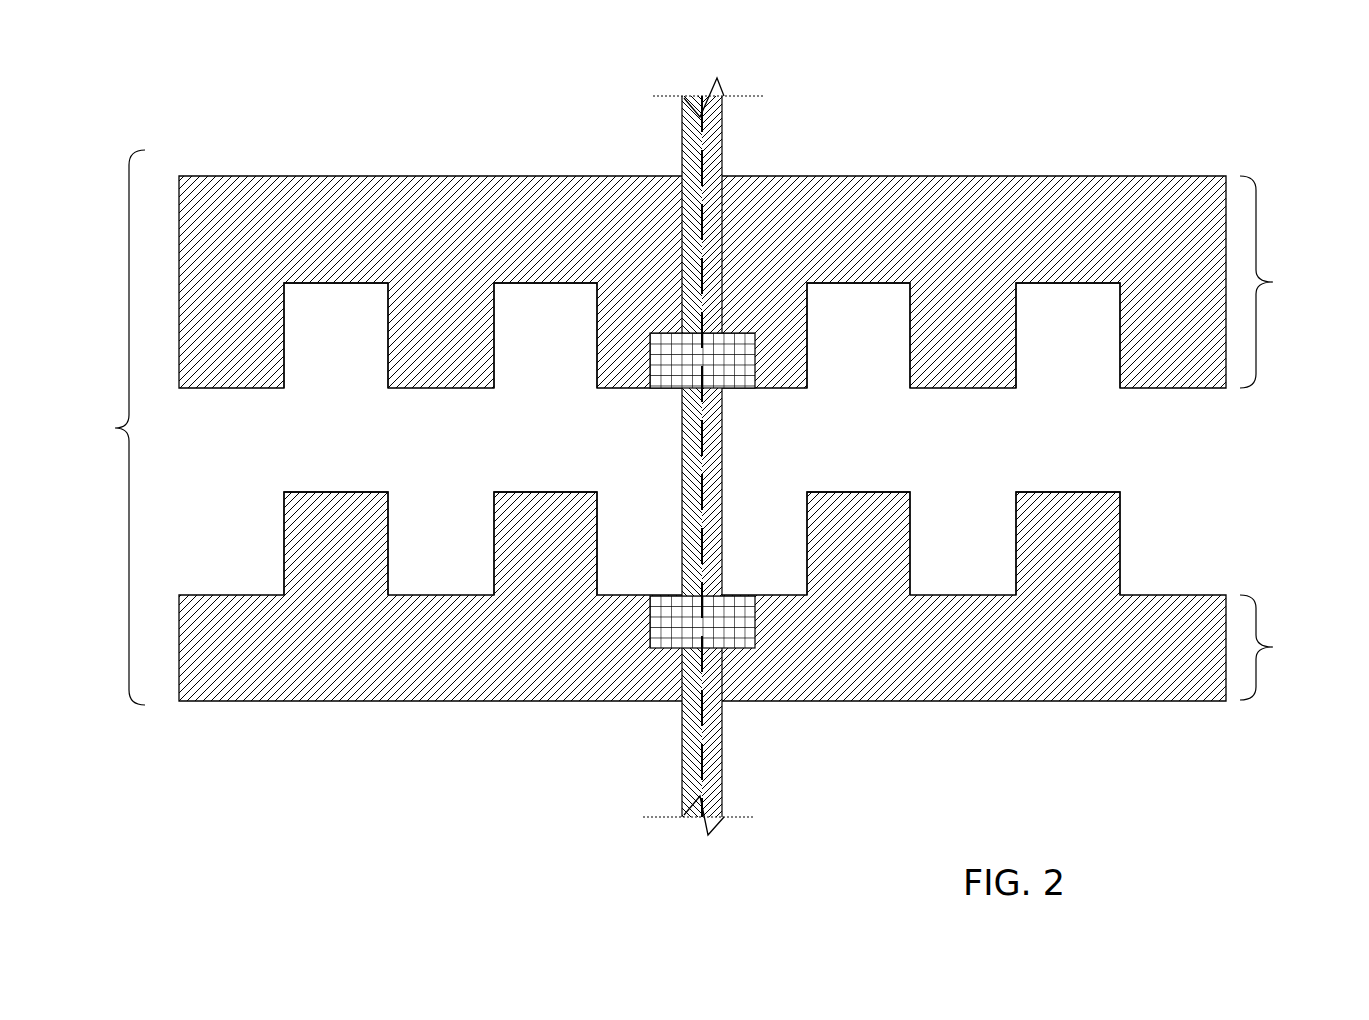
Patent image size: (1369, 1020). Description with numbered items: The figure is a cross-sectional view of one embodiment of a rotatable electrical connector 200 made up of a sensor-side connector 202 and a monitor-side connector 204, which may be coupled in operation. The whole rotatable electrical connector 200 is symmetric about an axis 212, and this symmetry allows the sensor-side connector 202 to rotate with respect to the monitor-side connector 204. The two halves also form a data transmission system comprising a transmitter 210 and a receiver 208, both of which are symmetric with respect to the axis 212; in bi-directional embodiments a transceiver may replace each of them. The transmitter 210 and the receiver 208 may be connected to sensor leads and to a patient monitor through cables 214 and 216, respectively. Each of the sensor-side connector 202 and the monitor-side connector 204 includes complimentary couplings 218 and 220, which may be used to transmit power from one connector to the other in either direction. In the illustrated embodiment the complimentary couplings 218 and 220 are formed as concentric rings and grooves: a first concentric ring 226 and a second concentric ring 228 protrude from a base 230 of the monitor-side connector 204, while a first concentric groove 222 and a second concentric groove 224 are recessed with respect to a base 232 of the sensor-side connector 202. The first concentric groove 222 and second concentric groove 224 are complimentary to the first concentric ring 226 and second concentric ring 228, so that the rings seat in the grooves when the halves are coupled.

The rotatable electrical connector 200 is at (96, 427).
The sensor-side connector 202 is at (406, 101).
The monitor-side connector 204 is at (396, 746).
The receiver 208 is at (690, 594).
The transmitter 210 is at (692, 387).
The axis 212 is at (703, 495).
The cable 214 is at (720, 157).
The cable 216 is at (720, 797).
The complimentary coupling 218 is at (556, 480).
The complimentary coupling 220 is at (354, 414).
The first concentric groove 222 is at (581, 284).
The second concentric groove 224 is at (378, 284).
The first concentric ring 226 is at (494, 558).
The second concentric ring 228 is at (284, 558).
The base 230 is at (1297, 647).
The base 232 is at (1289, 282).